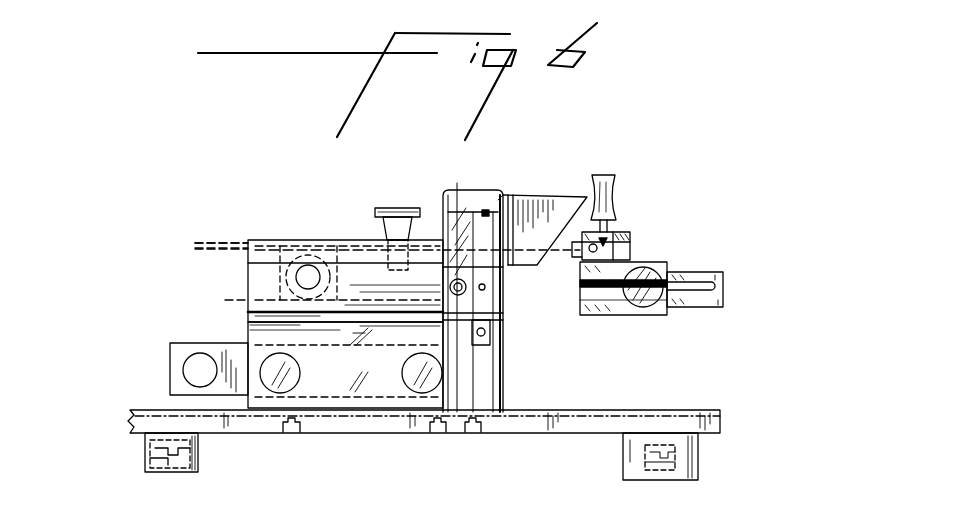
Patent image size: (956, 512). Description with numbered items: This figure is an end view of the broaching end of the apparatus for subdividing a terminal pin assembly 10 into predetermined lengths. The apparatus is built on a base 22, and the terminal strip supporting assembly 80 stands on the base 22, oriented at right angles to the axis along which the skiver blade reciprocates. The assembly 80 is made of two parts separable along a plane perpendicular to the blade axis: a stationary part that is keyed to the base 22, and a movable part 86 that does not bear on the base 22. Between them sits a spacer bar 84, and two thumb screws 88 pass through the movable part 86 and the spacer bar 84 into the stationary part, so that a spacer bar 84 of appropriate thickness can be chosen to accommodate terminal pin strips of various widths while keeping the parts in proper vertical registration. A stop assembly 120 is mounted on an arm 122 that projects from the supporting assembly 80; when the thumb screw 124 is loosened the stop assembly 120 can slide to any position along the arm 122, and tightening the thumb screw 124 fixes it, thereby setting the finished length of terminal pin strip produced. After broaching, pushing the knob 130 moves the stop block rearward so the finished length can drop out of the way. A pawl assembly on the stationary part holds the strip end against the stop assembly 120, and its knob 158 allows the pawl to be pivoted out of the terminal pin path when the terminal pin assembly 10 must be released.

The terminal pin assembly 10 is at (178, 240).
The base 22 is at (602, 418).
The terminal strip supporting assembly 80 is at (277, 226).
The spacer bar 84 is at (175, 370).
The movable part 86 is at (245, 335).
The thumb screws 88 is at (297, 381).
The stop assembly 120 is at (683, 198).
The arm 122 is at (720, 307).
The thumb screw 124 is at (648, 305).
The knob 130 is at (612, 186).
The knob 158 is at (400, 210).